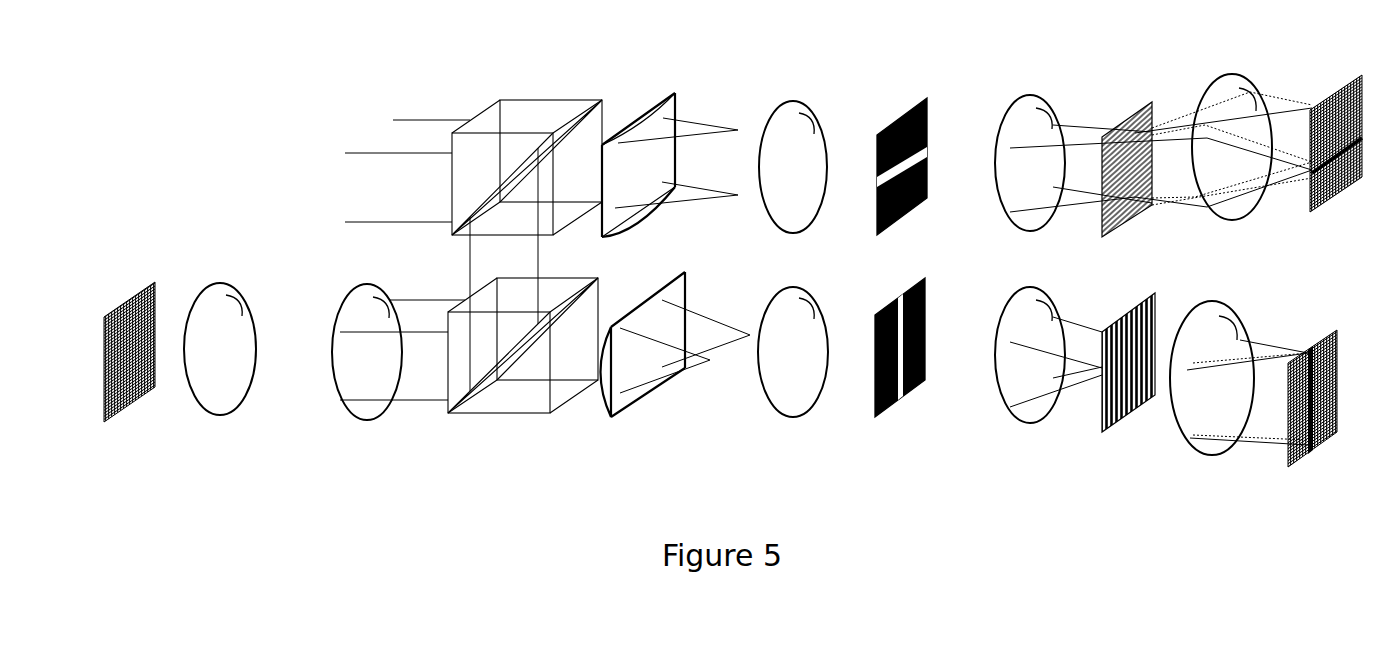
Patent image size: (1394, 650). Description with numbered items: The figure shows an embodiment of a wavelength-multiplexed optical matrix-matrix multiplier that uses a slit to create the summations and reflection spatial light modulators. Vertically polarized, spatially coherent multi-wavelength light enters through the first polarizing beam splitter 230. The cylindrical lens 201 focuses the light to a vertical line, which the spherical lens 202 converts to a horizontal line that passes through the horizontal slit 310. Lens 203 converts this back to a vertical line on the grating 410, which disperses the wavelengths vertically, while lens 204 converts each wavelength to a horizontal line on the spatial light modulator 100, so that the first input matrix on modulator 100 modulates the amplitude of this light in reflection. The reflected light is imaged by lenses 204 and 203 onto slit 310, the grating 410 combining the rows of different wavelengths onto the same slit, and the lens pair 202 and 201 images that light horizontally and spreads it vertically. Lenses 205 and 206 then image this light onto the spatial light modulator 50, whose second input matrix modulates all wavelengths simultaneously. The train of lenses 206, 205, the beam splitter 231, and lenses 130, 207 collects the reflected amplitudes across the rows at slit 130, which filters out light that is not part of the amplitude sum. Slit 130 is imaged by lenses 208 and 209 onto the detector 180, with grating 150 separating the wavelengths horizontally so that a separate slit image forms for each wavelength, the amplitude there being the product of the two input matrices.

The spatial light modulator 50 is at (129, 378).
The lens 206 is at (209, 319).
The lens 205 is at (348, 327).
The first polarizing beam splitter 230 is at (527, 135).
The beam splitter 231 is at (508, 328).
The cylindrical lens 201 is at (670, 136).
The slit 130 is at (763, 349).
The spherical lens 202 is at (779, 139).
The lens 207 is at (776, 326).
The horizontal slit 310 is at (879, 151).
The lens 203 is at (1012, 137).
The grating 410 is at (1120, 143).
The lens 204 is at (1213, 123).
The spatial light modulator 100 is at (1318, 124).
The lens 208 is at (1014, 329).
The grating 150 is at (1121, 338).
The lens 209 is at (1203, 348).
The detector 180 is at (1306, 371).